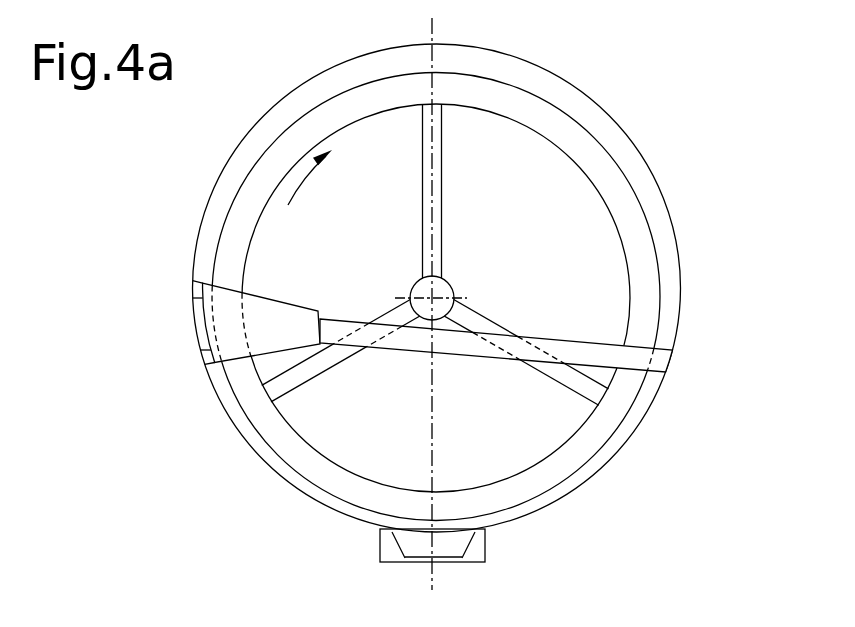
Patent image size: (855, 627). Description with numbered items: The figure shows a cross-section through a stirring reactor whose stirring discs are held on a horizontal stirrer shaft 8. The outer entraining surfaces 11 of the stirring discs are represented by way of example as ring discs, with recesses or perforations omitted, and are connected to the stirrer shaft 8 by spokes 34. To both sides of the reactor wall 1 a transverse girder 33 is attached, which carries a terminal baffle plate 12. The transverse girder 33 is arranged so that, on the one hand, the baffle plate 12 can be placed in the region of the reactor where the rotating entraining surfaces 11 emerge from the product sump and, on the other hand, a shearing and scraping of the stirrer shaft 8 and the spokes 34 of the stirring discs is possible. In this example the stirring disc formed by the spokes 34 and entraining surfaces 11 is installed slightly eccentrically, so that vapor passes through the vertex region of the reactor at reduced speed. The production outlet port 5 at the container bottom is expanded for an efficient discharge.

The reactor wall 1 is at (202, 213).
The outer entraining surfaces 11 is at (495, 100).
The baffle plate 12 is at (205, 303).
The transverse girder 33 is at (602, 357).
The spokes 34 is at (442, 201).
The stirrer shaft 8 is at (408, 290).
The production outlet port 5 is at (457, 543).